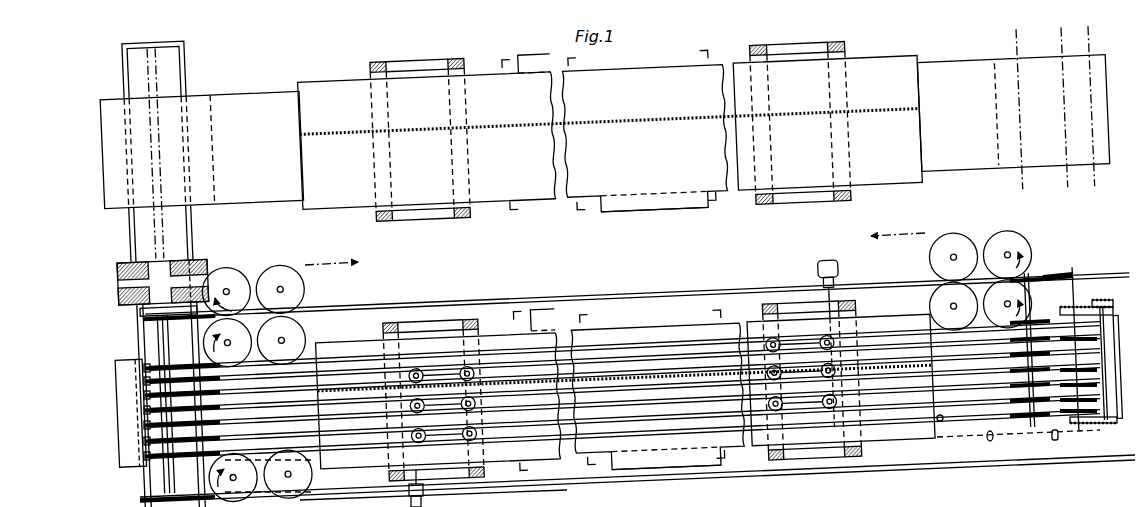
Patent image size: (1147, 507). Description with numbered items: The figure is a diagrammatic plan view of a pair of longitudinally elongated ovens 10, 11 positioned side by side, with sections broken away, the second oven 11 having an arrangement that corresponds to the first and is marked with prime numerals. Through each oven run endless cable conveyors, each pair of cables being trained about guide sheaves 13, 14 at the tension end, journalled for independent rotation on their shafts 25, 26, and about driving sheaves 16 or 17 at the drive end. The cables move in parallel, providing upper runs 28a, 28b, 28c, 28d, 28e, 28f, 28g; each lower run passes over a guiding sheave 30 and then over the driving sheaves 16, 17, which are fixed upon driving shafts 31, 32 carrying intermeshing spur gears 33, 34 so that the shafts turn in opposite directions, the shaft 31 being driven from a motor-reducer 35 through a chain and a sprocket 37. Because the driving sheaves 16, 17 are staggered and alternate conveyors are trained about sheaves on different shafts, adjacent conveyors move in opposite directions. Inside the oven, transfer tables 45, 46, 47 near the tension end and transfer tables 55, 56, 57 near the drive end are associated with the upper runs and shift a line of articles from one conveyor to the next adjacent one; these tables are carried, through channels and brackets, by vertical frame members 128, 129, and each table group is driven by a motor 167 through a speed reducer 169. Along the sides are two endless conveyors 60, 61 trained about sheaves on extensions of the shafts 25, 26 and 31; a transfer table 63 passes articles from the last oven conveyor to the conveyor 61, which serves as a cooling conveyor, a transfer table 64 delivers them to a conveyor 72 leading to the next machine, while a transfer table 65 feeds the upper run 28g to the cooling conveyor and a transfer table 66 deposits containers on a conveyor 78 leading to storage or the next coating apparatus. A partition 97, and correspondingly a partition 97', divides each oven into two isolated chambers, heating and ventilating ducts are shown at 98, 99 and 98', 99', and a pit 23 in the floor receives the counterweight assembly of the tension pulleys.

The oven 10 is at (641, 328).
The second oven 11 is at (625, 73).
The guide sheave 13 is at (156, 356).
The guide sheave 14 is at (188, 366).
The driving sheave 16 is at (1067, 431).
The driving sheave 17 is at (1103, 421).
The pit 23 is at (134, 245).
The shaft 25 is at (163, 474).
The shaft 26 is at (203, 474).
The upper run 28a is at (617, 431).
The upper run 28b is at (638, 420).
The upper run 28c is at (682, 400).
The upper run 28d is at (712, 387).
The upper run 28e is at (613, 377).
The upper run 28f is at (642, 360).
The upper run 28g is at (720, 345).
The guiding sheave 30 is at (1020, 418).
The driving shaft 31 is at (1085, 433).
The driving shaft 32 is at (1097, 428).
The spur gear 33 is at (1085, 310).
The spur gear 34 is at (1103, 303).
The motor-reducer 35 is at (1100, 362).
The sprocket 37 is at (1063, 328).
The transfer table 45 is at (440, 433).
The transfer table 46 is at (447, 408).
The transfer table 47 is at (447, 376).
The transfer table 55 is at (794, 404).
The transfer table 56 is at (804, 378).
The transfer table 57 is at (807, 346).
The endless conveyor 60 is at (850, 472).
The endless conveyor 61 is at (693, 293).
The transfer table 63 is at (968, 296).
The transfer table 64 is at (254, 279).
The transfer table 65 is at (268, 331).
The transfer table 66 is at (979, 246).
The conveyor 72 is at (328, 264).
The conveyor 78 is at (897, 223).
The partition 97 is at (625, 385).
The partition 97' is at (609, 116).
The duct 98 is at (683, 472).
The duct 98' is at (655, 212).
The duct 99 is at (438, 372).
The duct 99' is at (530, 54).
The vertical frame member 128 is at (378, 218).
The vertical frame member 129 is at (470, 218).
The motor 167 is at (410, 502).
The speed reducer 169 is at (425, 497).